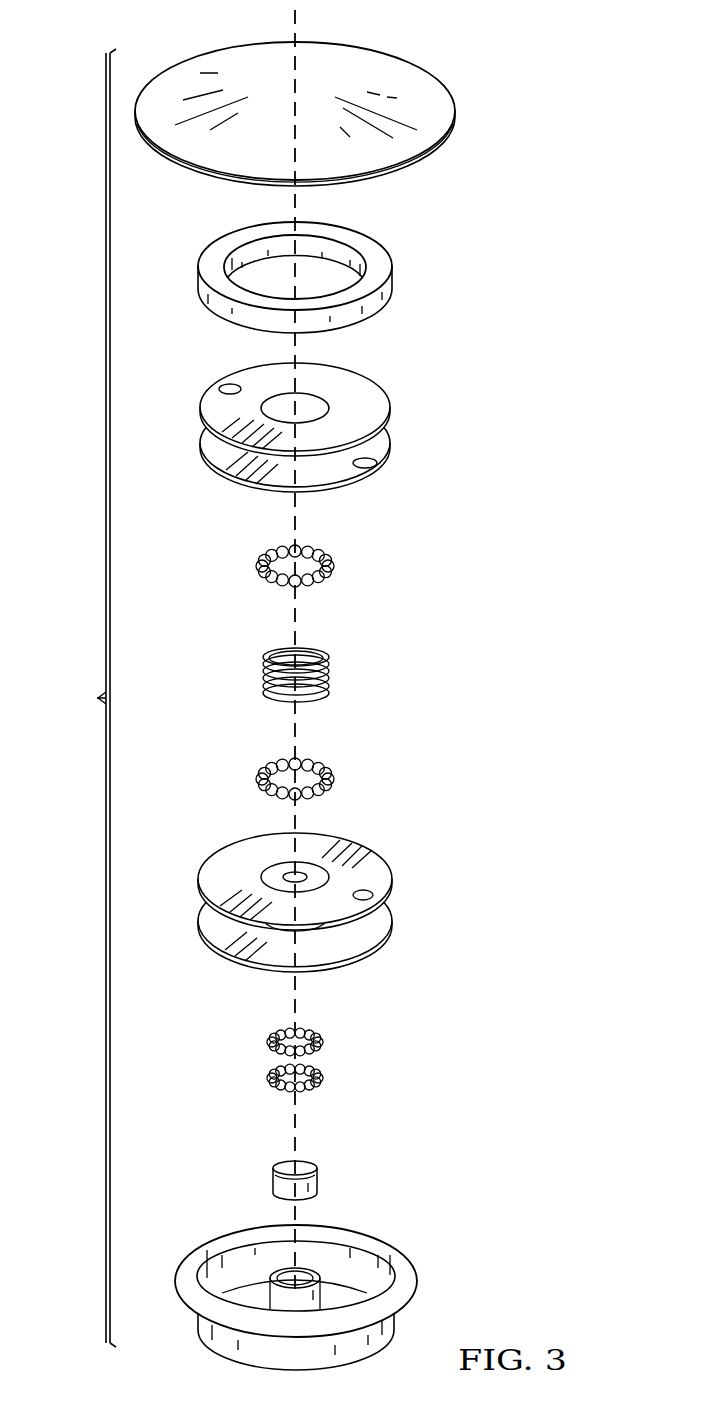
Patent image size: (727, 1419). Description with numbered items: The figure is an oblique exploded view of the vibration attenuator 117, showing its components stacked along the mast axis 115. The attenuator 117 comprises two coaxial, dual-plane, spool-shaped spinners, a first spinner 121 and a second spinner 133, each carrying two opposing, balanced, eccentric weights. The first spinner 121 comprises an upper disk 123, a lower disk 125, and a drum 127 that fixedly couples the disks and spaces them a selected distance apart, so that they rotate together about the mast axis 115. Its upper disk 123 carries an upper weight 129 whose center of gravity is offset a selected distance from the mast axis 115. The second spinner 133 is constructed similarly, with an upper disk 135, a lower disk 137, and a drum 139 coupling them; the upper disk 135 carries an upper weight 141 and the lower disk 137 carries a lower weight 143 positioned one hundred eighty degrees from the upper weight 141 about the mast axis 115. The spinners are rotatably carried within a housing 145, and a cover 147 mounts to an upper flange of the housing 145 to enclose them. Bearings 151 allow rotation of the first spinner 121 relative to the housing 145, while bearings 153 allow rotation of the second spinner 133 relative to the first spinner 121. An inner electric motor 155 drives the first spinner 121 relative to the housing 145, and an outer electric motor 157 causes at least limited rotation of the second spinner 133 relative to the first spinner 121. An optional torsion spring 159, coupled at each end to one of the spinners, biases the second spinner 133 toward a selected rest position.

The mast axis 115 is at (294, 18).
The attenuator 117 is at (87, 698).
The first spinner 121 is at (321, 907).
The upper disk 123 is at (228, 856).
The lower disk 125 is at (373, 950).
The drum 127 is at (288, 928).
The upper weight 129 is at (375, 897).
The second spinner 133 is at (299, 429).
The upper disk 135 is at (380, 405).
The lower disk 137 is at (229, 478).
The drum 139 is at (322, 408).
The upper weight 141 is at (228, 386).
The lower weight 143 is at (381, 464).
The housing 145 is at (209, 1242).
The cover 147 is at (455, 112).
The bearings 151 is at (324, 1044).
The bearings 153 is at (333, 566).
The inner electric motor 155 is at (318, 1179).
The outer electric motor 157 is at (392, 278).
The torsion spring 159 is at (331, 674).